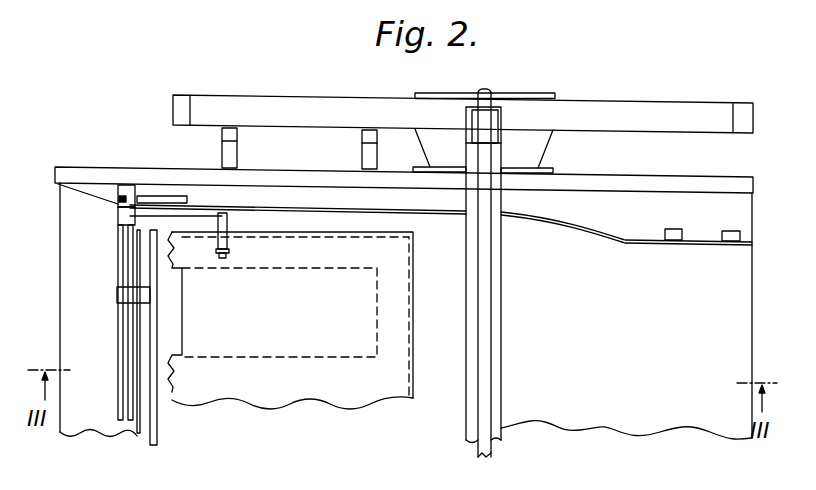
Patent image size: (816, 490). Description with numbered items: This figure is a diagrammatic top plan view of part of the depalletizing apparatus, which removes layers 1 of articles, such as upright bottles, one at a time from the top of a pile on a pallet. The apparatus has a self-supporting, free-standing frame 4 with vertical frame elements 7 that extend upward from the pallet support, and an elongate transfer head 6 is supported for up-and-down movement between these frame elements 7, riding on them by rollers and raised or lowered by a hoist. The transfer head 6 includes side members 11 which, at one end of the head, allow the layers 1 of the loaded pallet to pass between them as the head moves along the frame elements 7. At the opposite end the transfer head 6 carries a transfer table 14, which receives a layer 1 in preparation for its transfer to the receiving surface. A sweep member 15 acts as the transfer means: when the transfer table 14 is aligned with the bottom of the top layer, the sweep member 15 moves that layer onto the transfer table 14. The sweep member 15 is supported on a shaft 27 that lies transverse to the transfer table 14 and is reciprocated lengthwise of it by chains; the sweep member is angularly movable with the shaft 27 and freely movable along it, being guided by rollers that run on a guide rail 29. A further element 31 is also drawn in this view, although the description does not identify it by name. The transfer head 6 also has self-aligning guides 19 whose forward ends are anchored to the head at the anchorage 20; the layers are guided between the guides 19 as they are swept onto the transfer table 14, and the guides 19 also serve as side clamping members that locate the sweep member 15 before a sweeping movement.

The layers of articles 1 is at (236, 399).
The frame 4 is at (562, 112).
The transfer head 6 is at (709, 175).
The vertical frame elements 7 is at (496, 107).
The side members 11 is at (266, 176).
The transfer table 14 is at (705, 332).
The sweep member 15 is at (158, 330).
The self-aligning guides 19 is at (626, 245).
The guide anchorage 20 is at (731, 231).
The shaft 27 is at (120, 236).
The guide rail 29 is at (116, 266).
The clamp 31 is at (227, 258).